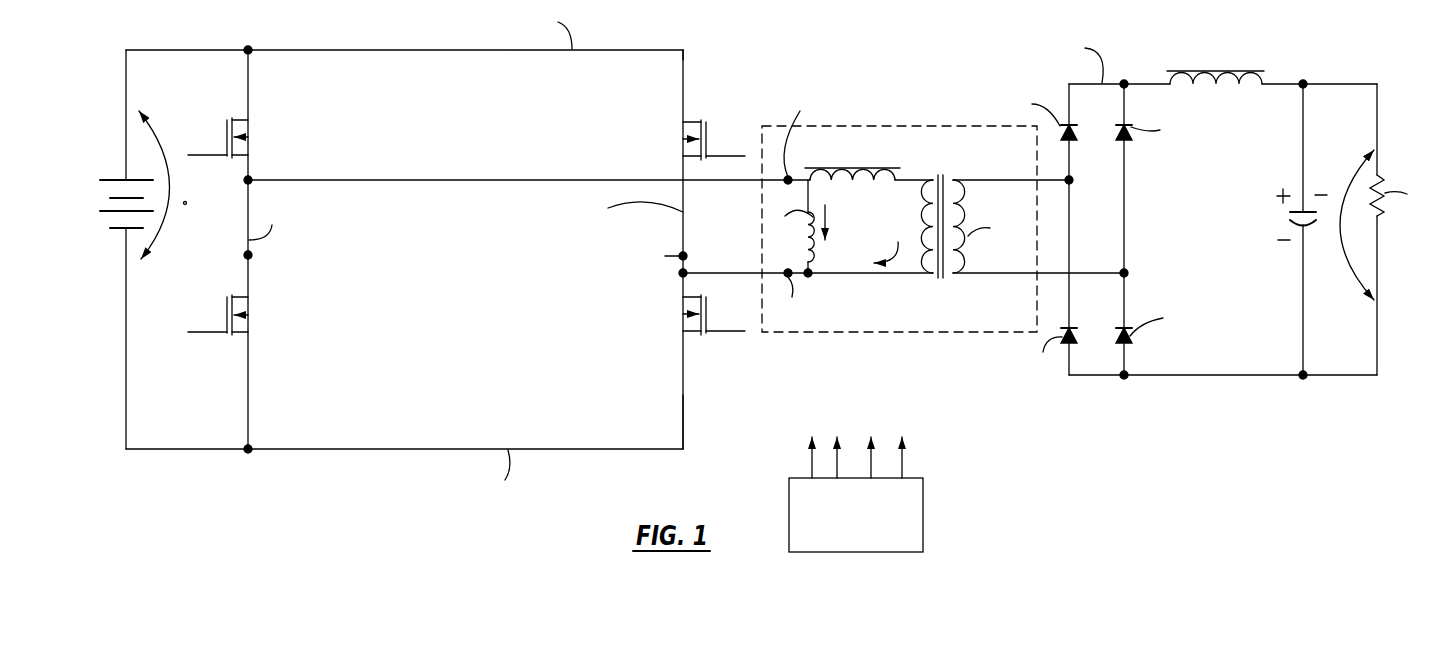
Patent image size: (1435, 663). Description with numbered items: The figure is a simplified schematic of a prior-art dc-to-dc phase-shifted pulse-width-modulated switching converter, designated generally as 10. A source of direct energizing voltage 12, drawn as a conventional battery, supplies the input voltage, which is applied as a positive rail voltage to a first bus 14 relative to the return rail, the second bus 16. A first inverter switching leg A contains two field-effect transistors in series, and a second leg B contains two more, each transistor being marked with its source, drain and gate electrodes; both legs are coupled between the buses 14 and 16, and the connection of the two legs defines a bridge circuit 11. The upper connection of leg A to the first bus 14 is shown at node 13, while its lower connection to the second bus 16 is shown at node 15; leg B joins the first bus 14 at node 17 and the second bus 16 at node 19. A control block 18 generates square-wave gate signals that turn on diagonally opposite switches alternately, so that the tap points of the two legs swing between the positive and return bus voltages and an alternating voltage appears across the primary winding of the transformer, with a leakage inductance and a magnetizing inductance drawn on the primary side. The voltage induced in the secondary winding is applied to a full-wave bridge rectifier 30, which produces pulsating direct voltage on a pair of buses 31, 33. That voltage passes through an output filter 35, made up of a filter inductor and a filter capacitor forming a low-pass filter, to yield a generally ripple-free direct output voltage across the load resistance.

The full bridge DC-DC power converter 10 is at (583, 593).
The bridge circuit 11 is at (461, 255).
The source of direct energizing voltage 12 is at (146, 179).
The DC bus node 13 is at (245, 51).
The first bus 14 is at (420, 49).
The return node 15 is at (248, 448).
The second bus 16 is at (405, 450).
The Q3 drain connection node 17 is at (681, 54).
The control block 18 is at (852, 553).
The Q4 source connection node 19 is at (683, 402).
The full-wave bridge rectifier 30 is at (1111, 227).
The bus 31 is at (1145, 83).
The bus 33 is at (1178, 376).
The output filter 35 is at (1245, 172).